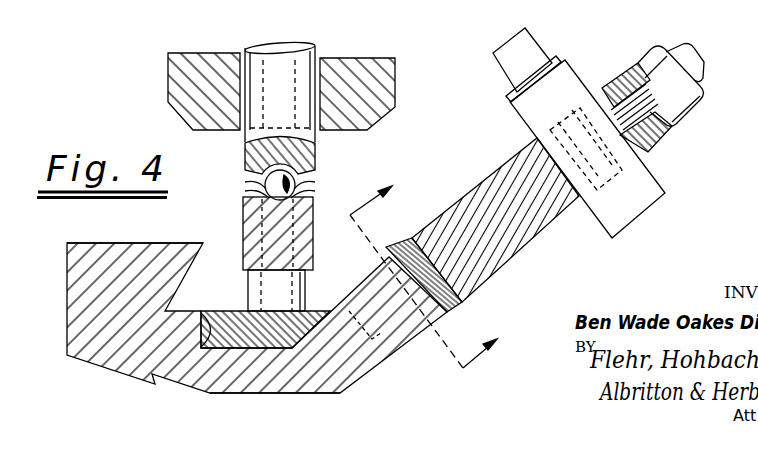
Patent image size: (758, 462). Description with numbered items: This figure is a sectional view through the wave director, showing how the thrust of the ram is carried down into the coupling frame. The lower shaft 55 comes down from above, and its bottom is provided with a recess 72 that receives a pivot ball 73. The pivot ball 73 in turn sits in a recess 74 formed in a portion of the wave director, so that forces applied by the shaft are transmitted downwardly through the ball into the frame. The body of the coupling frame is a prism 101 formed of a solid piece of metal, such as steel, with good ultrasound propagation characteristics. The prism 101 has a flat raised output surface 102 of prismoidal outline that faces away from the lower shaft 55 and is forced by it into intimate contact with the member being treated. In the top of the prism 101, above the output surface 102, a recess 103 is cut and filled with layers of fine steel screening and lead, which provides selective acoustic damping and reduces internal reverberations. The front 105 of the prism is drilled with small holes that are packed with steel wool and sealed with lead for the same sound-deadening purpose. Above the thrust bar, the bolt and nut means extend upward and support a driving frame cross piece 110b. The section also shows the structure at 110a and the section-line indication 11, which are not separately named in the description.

The prism 101 is at (67, 317).
The output surface 102 is at (268, 398).
The recess 103 is at (214, 315).
The front 105 is at (67, 277).
The lower bearing block 110a is at (316, 242).
The driving frame cross piece 110b is at (377, 85).
The lower shaft 55 is at (316, 152).
The recess 72 is at (265, 184).
The pivot ball 73 is at (306, 185).
The recess 74 is at (268, 192).
The section line 11- 11 is at (440, 267).